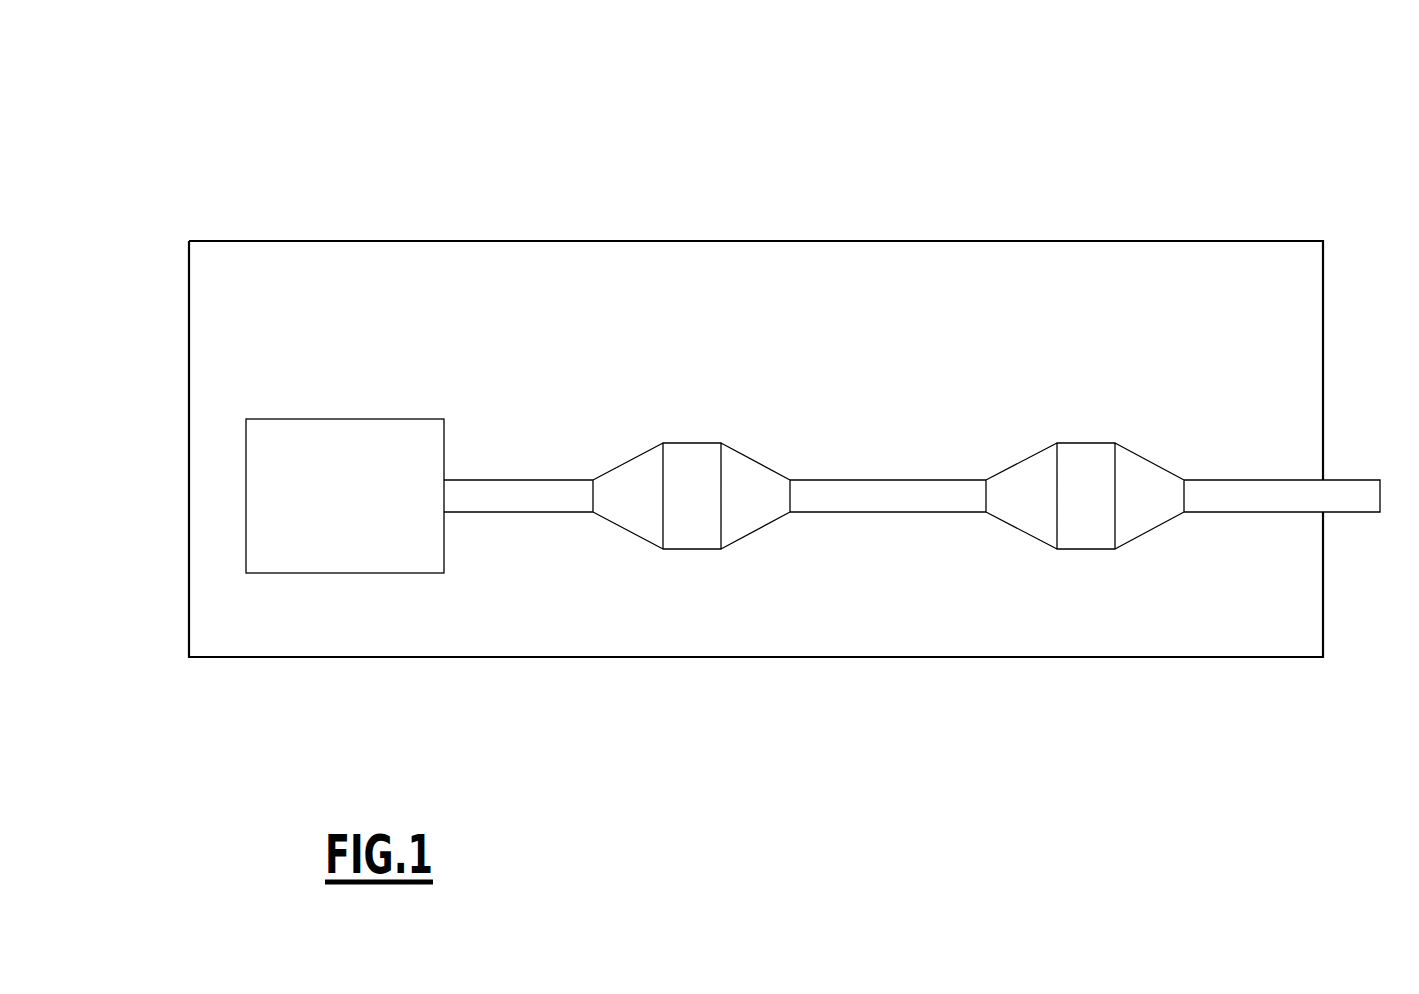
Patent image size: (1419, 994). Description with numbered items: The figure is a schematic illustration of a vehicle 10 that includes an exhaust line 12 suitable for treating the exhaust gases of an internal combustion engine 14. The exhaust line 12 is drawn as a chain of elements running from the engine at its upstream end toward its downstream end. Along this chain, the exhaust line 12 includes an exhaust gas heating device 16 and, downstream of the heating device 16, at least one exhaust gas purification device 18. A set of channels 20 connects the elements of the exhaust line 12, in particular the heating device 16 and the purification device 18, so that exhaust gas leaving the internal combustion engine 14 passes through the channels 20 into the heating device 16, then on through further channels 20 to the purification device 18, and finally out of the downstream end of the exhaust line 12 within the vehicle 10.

The vehicle 10 is at (867, 218).
The exhaust line 12 is at (555, 540).
The internal combustion engine 14 is at (360, 573).
The exhaust gas heating device 16 is at (690, 425).
The exhaust gas purification device 18 is at (1090, 425).
The set of channels 20 is at (888, 540).